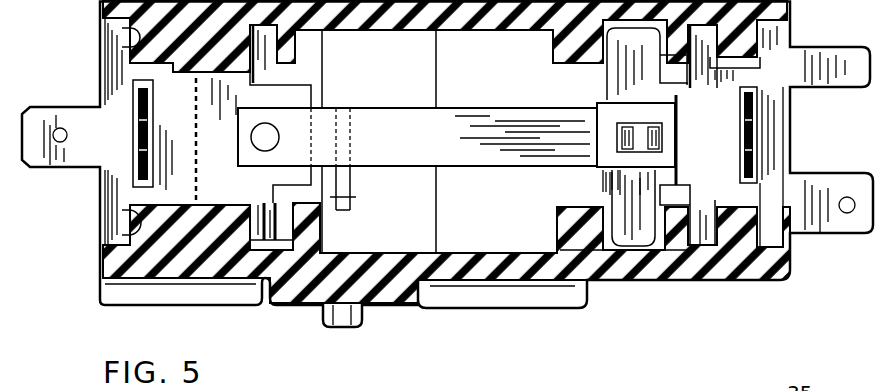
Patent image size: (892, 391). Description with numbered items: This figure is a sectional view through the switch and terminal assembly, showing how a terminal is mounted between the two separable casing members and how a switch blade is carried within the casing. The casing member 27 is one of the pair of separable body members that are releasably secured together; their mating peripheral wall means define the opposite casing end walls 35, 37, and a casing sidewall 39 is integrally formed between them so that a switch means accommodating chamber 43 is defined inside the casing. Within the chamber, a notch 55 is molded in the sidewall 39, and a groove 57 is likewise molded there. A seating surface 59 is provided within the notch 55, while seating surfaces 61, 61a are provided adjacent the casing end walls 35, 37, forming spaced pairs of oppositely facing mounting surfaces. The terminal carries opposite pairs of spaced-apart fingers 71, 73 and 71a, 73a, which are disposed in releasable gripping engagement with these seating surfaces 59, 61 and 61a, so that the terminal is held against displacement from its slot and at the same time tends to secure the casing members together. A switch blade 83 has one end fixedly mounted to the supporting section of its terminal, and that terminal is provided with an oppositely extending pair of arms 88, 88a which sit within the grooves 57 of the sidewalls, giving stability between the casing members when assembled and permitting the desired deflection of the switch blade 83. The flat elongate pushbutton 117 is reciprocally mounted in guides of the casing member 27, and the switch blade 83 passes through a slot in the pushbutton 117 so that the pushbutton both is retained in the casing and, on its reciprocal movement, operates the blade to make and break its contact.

The casing member 27 is at (397, 268).
The casing end wall 35 is at (790, 130).
The casing end wall 37 is at (100, 80).
The casing sidewall 39 is at (475, 268).
The switch means accommodating chamber 43 is at (478, 202).
The notch 55 is at (236, 280).
The groove 57 is at (640, 262).
The seating surface 59 is at (240, 255).
The seating surface 61 is at (133, 220).
The seating surface 61a is at (117, 47).
The finger 71 is at (263, 197).
The finger 71a is at (285, 63).
The finger 73 is at (115, 232).
The finger 73a is at (130, 40).
The switch blade 83 is at (470, 108).
The arm 88 is at (612, 205).
The arm 88a is at (632, 52).
The pushbutton 117 is at (352, 193).